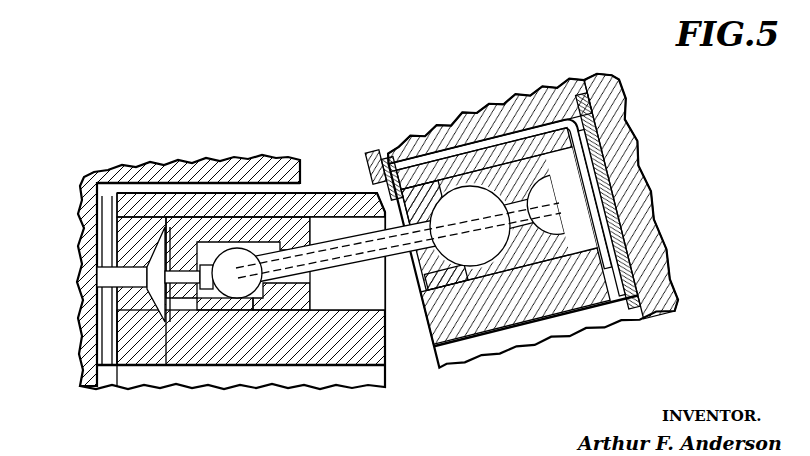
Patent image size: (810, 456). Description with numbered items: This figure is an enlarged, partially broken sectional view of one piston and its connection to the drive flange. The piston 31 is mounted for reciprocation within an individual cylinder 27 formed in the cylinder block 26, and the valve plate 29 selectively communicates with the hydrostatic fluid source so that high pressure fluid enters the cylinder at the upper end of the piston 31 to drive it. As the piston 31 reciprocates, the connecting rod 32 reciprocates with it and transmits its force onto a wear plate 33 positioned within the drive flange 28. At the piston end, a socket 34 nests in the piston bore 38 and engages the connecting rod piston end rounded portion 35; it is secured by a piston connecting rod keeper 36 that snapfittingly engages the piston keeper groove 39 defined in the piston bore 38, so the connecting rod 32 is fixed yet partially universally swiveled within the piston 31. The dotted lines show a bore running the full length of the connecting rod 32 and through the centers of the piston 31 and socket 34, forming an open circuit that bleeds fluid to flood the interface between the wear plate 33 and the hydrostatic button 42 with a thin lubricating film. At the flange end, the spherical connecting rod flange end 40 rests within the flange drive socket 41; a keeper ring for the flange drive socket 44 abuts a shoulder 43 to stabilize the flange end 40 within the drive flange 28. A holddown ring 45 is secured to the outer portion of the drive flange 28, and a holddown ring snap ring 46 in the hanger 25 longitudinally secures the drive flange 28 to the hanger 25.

The hanger 25 is at (518, 105).
The cylinder block 26 is at (242, 186).
The cylinder 27 is at (340, 222).
The drive flange 28 is at (548, 135).
The valve plate 29 is at (105, 190).
The piston 31 is at (184, 225).
The connecting rod 32 is at (397, 262).
The wear plate 33 is at (618, 247).
The socket 34 is at (200, 330).
The connecting rod piston end rounded portion 35 is at (228, 294).
The piston connecting rod keeper 36 is at (300, 182).
The piston bore 38 is at (325, 295).
The piston keeper groove 39 is at (277, 298).
The connecting rod flange end 40 is at (468, 198).
The flange drive socket 41 is at (606, 104).
The hydrostatic button 42 is at (616, 126).
The shoulder 43 is at (447, 285).
The keeper ring for the flange drive socket 44 is at (424, 176).
The holddown ring 45 is at (386, 165).
The holddown ring snap ring 46 is at (372, 165).